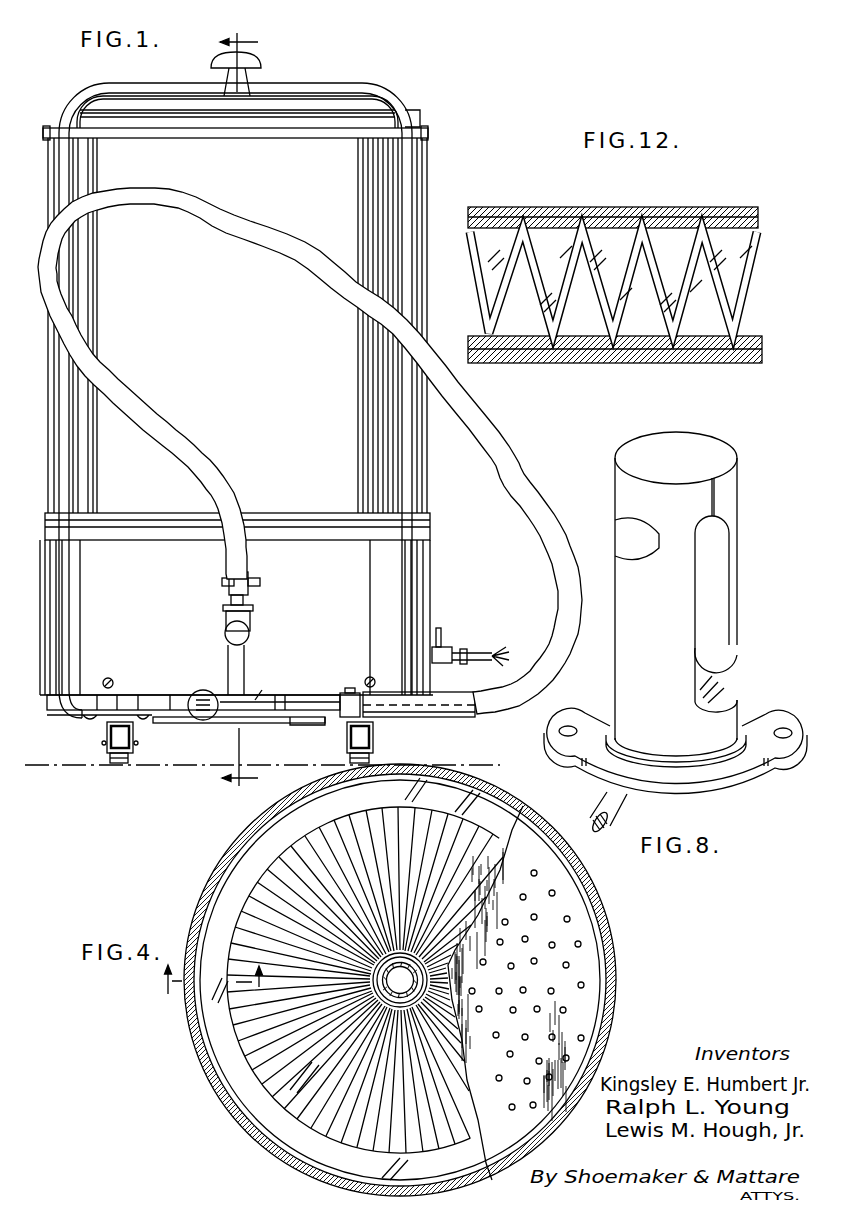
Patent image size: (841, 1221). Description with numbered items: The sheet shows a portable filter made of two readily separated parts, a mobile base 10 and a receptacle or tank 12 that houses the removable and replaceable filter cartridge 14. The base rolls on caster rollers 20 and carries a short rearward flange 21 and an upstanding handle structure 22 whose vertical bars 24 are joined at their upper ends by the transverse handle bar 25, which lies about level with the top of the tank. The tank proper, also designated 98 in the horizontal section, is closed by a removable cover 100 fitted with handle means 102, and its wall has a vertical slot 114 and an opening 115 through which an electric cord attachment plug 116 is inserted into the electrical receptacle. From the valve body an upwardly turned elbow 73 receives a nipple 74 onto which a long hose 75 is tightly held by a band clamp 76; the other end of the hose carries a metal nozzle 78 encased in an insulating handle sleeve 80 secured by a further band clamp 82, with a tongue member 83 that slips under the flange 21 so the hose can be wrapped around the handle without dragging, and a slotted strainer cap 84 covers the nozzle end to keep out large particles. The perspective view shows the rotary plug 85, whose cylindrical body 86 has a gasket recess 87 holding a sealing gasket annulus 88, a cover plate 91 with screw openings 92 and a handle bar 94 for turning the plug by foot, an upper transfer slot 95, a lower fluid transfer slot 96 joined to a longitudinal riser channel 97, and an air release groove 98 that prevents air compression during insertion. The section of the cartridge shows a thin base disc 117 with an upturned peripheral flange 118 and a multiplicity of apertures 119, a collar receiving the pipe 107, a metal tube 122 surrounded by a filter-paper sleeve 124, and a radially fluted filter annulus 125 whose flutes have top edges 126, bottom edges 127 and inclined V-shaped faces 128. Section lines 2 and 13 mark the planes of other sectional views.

In FIG. 1, the section line 2- 2 is at (239, 411).
In FIG. 1, the mobile base 10 is at (80, 728).
In FIG. 1, the receptacle or tank 12 is at (428, 188).
In FIG. 4, the section line 13- 13 is at (215, 981).
In FIG. 4, the filter cartridge 14 is at (242, 1096).
In FIG. 1, the caster rollers 20 is at (115, 762).
In FIG. 1, the flange 21 is at (174, 723).
In FIG. 1, the handle structure 22 is at (182, 75).
In FIG. 1, the vertical bars 24 is at (72, 410).
In FIG. 1, the transverse handle bar 25 is at (333, 92).
In FIG. 1, the elbow 73 is at (248, 634).
In FIG. 1, the nipple 74 is at (250, 607).
In FIG. 1, the hose 75 is at (205, 462).
In FIG. 1, the band clamp 76 is at (243, 572).
In FIG. 1, the metal nozzle 78 is at (305, 697).
In FIG. 1, the handle sleeve 80 is at (445, 712).
In FIG. 1, the band clamp 82 is at (350, 712).
In FIG. 1, the tongue member 83 is at (313, 724).
In FIG. 1, the slotted strainer cap 84 is at (205, 720).
In FIG. 8, the rotary plug 85 is at (625, 663).
In FIG. 8, the cylindrical body 86 is at (630, 595).
In FIG. 8, the gasket recess 87 is at (625, 728).
In FIG. 8, the gasket annulus 88 is at (736, 736).
In FIG. 8, the closure or cover plate 91 is at (718, 772).
In FIG. 8, the bolt or screw openings 92 is at (783, 742).
In FIG. 1, the handle bar 94 is at (250, 704).
In FIG. 8, the handle bar 94 is at (604, 805).
In FIG. 8, the transfer slot 95 is at (625, 548).
In FIG. 8, the fluid transfer slot 96 is at (725, 690).
In FIG. 8, the riser channel 97 is at (718, 585).
In FIG. 8, the air release groove 98 is at (716, 497).
In FIG. 4, the air release groove 98 is at (618, 989).
In FIG. 1, the removable cover 100 is at (365, 109).
In FIG. 1, the handle means 102 is at (258, 62).
In FIG. 4, the pipe 107 is at (401, 953).
In FIG. 1, the vertical slot 114 is at (230, 664).
In FIG. 1, the opening 115 is at (441, 640).
In FIG. 1, the electric cord attachment plug 116 is at (440, 658).
In FIG. 12, the base disc 117 is at (717, 346).
In FIG. 4, the base disc 117 is at (575, 930).
In FIG. 4, the upturned peripheral flange 118 is at (601, 950).
In FIG. 4, the apertures 119 is at (552, 1037).
In FIG. 4, the metal tube 122 is at (401, 1008).
In FIG. 4, the upstanding sleeve 124 is at (373, 959).
In FIG. 4, the radially fluted filter annulus 125 is at (278, 898).
In FIG. 12, the top edges of the flutes 126 is at (578, 237).
In FIG. 12, the bottom edges of the flutes 127 is at (613, 336).
In FIG. 12, the faces of the flutes 128 is at (716, 236).